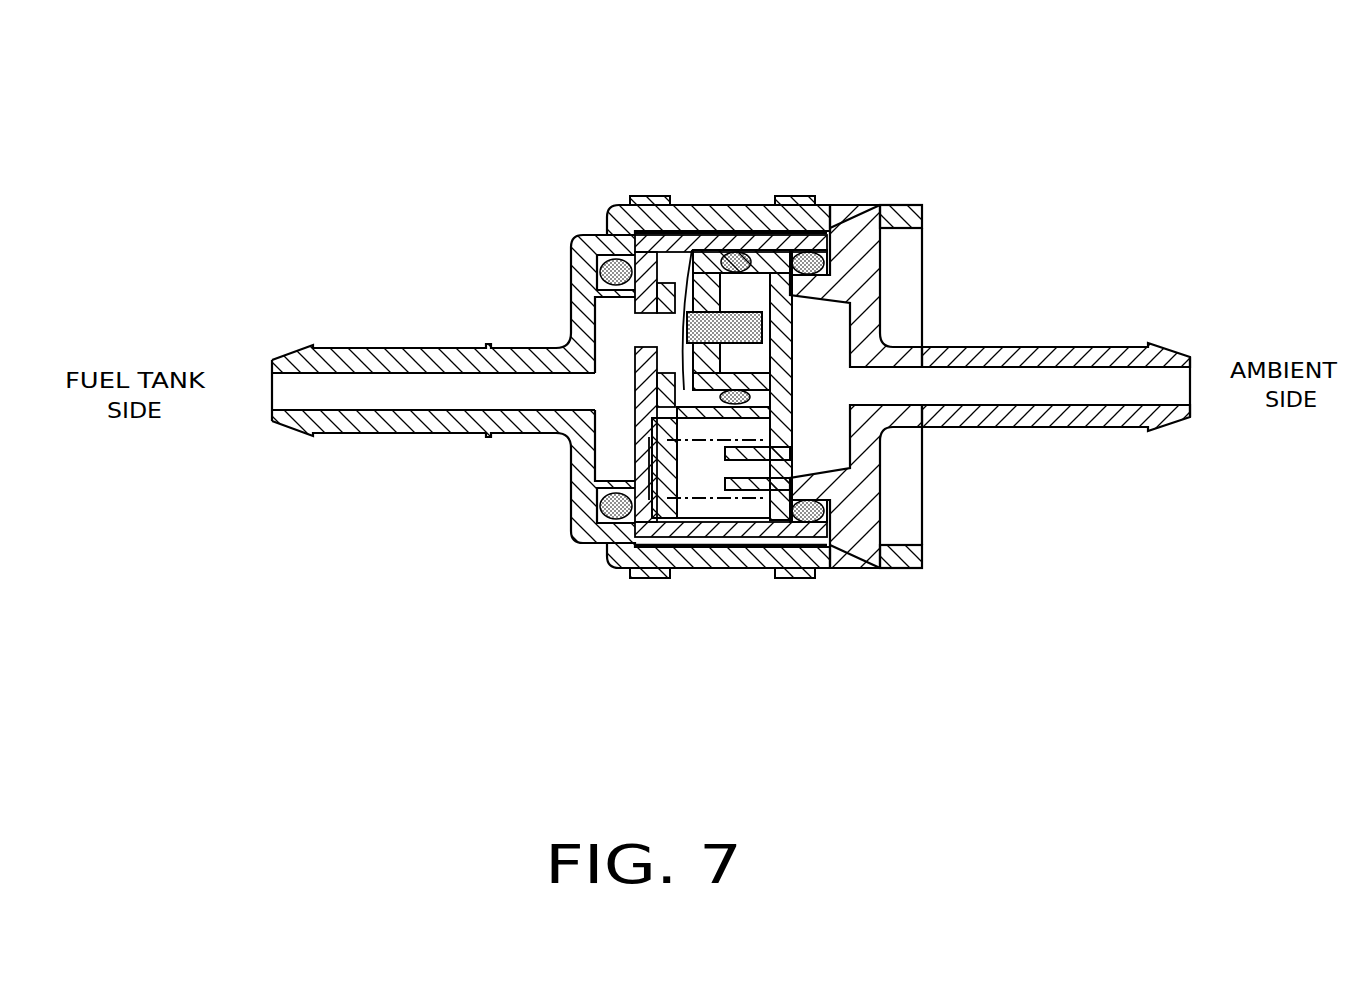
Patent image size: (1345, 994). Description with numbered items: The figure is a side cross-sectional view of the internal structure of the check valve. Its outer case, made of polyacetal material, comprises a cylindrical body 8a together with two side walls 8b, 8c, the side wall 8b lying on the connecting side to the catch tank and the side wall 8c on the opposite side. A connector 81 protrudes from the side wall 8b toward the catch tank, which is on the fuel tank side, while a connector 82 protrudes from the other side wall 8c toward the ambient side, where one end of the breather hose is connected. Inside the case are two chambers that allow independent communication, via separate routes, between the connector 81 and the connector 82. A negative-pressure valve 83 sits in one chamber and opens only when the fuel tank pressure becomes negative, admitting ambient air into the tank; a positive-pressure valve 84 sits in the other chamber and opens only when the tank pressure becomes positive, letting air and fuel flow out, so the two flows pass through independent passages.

The cylindrical body 8a is at (737, 205).
The side wall 8b is at (571, 290).
The side wall 8c is at (883, 305).
The connector 81 is at (425, 433).
The connector 82 is at (1055, 428).
The negative-pressure valve 83 is at (678, 297).
The positive-pressure valve 84 is at (660, 503).